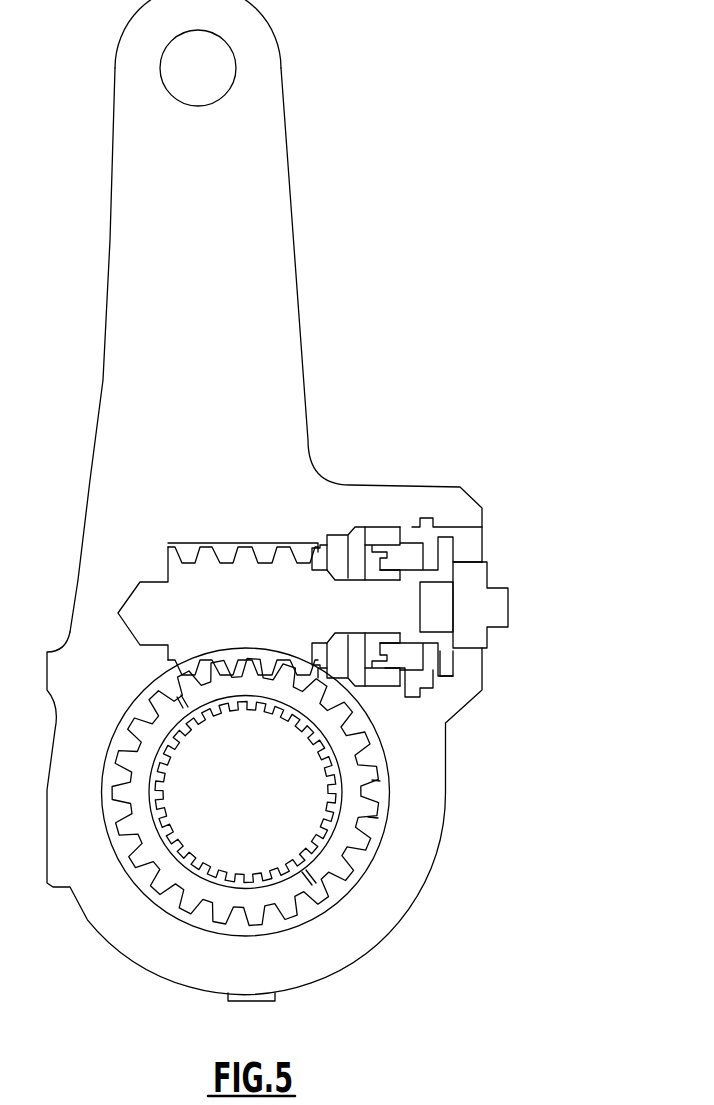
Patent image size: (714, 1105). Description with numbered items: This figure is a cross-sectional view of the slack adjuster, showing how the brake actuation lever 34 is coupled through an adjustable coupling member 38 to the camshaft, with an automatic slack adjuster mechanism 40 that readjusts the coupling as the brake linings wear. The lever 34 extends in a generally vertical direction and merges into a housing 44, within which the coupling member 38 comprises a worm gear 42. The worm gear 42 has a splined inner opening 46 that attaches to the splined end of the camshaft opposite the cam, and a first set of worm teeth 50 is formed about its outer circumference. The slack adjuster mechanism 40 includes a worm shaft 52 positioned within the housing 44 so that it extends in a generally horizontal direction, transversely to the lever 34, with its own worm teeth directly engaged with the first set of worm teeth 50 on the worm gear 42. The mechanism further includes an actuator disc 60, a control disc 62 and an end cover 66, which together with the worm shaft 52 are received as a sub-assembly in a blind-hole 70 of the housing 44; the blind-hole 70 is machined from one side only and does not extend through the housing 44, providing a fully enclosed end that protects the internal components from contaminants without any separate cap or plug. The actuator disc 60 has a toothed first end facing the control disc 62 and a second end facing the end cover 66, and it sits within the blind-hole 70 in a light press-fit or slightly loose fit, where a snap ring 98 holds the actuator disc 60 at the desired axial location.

The brake actuation lever 34 is at (266, 255).
The coupling member 38 is at (318, 924).
The automatic slack adjuster mechanism 40 is at (573, 470).
The worm gear 42 is at (137, 830).
The housing 44 is at (383, 910).
The splined inner opening 46 is at (243, 876).
The first set of worm teeth 50 is at (368, 817).
The worm shaft 52 is at (263, 627).
The actuator disc 60 is at (412, 527).
The control disc 62 is at (372, 552).
The end cover 66 is at (478, 578).
The blind-hole 70 is at (230, 552).
The snap ring 98 is at (428, 662).